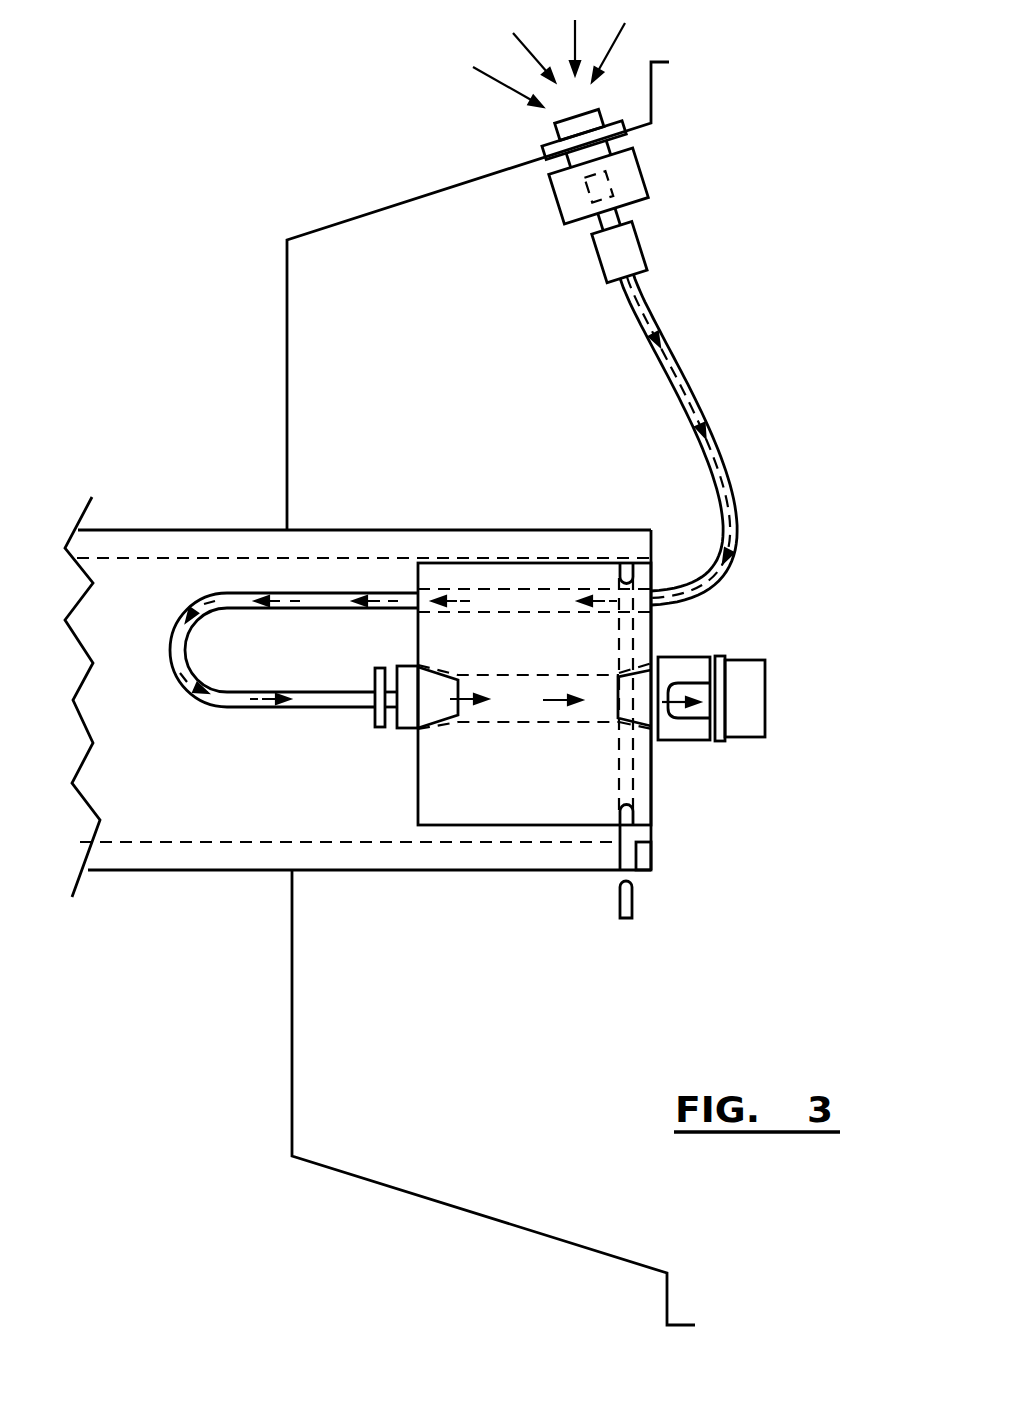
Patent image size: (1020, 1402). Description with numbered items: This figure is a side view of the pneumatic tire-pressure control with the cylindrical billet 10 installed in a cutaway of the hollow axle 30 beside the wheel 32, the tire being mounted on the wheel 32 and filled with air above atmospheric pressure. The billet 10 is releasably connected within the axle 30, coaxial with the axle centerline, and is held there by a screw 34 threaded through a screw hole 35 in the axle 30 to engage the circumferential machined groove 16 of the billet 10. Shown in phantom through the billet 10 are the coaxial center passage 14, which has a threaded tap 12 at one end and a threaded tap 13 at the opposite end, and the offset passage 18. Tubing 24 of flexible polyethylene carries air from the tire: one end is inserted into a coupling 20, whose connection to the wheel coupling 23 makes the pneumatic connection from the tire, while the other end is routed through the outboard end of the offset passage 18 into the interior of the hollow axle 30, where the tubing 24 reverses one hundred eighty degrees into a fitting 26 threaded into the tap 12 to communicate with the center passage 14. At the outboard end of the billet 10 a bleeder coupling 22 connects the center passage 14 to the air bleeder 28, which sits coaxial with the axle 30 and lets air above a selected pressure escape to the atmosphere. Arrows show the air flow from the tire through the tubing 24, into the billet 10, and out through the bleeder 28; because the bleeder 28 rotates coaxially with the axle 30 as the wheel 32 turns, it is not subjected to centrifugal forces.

The cylindrical billet 10 is at (500, 826).
The threaded tap 12 is at (438, 722).
The threaded tap 13 is at (618, 715).
The center passage 14 is at (532, 710).
The circumferential machined groove 16 is at (634, 803).
The offset passage 18 is at (488, 598).
The coupling 20 is at (598, 253).
The bleeder coupling 22 is at (688, 657).
The wheel coupling 23 is at (644, 180).
The tubing 24 is at (713, 435).
The fitting 26 is at (403, 728).
The air bleeder 28 is at (765, 702).
The axle 30 is at (190, 871).
The wheel 32 is at (405, 203).
The screw 34 is at (634, 897).
The screw hole 35 is at (627, 876).